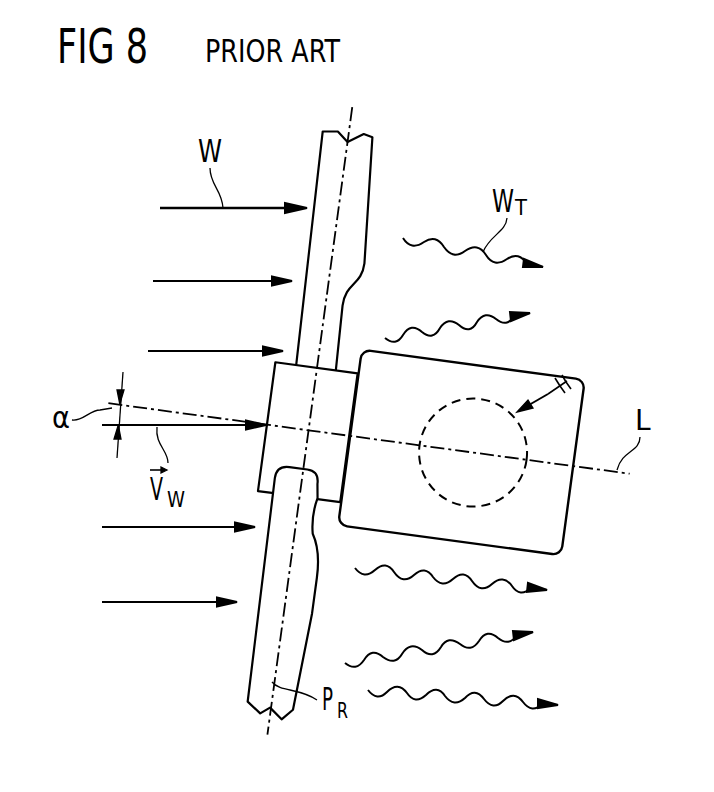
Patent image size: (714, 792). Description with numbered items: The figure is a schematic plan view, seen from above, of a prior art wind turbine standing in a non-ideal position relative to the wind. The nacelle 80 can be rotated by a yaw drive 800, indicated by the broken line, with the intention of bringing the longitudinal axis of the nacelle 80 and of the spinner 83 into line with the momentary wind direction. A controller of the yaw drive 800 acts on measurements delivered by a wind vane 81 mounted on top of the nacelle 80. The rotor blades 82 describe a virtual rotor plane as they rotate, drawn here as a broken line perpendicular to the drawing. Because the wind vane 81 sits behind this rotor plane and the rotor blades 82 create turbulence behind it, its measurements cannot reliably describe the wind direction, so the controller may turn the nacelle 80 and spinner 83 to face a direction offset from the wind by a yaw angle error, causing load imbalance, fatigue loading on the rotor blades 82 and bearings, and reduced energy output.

The nacelle 80 is at (562, 502).
The wind vane 81 is at (548, 394).
The rotor blades 82 is at (358, 217).
The spinner 83 is at (273, 385).
The yaw drive 800 is at (437, 477).